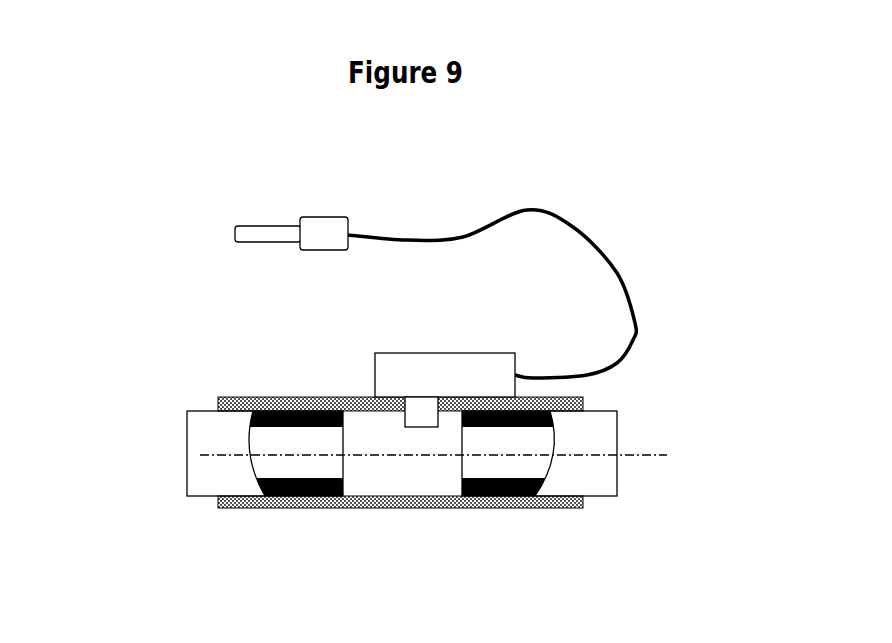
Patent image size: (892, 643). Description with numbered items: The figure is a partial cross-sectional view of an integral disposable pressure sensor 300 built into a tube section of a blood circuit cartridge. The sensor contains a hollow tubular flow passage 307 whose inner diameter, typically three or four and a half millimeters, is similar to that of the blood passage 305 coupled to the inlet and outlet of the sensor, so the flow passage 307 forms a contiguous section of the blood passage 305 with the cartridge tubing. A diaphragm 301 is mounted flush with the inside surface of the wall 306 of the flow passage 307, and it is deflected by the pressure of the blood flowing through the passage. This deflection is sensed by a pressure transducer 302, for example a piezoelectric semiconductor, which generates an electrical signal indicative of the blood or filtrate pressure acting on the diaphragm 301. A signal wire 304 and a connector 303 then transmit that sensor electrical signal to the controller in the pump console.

The pressure sensor 300 is at (438, 490).
The diaphragm 301 is at (423, 413).
The pressure transducer 302 is at (428, 353).
The connector 303 is at (285, 213).
The signal wire 304 is at (595, 230).
The blood passage 305 is at (200, 452).
The wall 306 is at (452, 428).
The flow passage 307 is at (377, 463).